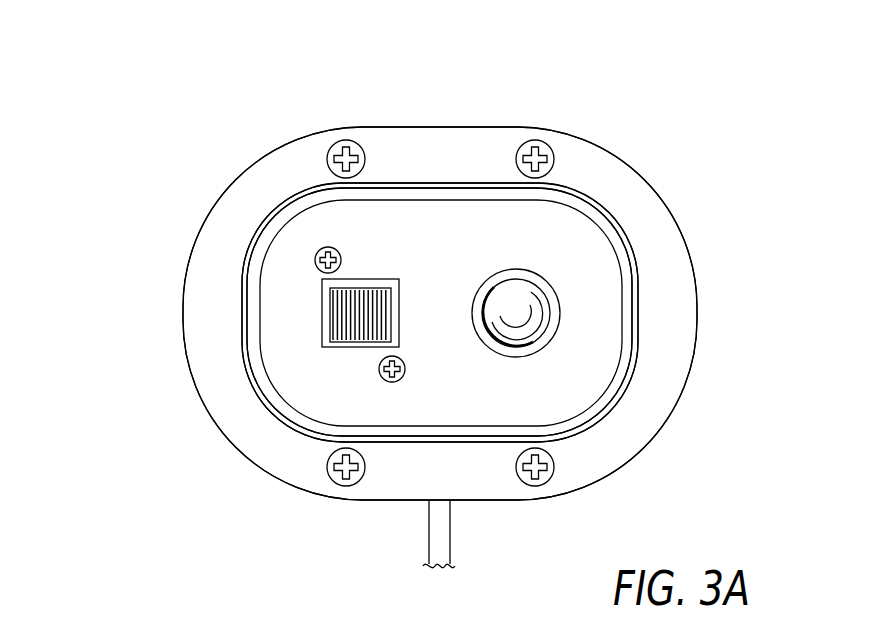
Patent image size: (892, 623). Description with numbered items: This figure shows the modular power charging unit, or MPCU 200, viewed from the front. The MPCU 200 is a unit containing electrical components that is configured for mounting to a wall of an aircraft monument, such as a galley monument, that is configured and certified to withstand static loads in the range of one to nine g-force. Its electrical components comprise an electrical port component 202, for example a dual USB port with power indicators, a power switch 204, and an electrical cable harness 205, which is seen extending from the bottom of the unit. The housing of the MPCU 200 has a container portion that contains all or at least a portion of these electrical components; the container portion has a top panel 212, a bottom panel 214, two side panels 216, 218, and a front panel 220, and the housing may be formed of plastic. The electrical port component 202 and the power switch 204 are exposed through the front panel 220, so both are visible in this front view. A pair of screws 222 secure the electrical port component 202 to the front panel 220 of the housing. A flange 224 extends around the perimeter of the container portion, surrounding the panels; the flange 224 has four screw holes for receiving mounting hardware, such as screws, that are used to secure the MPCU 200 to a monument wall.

The MPCU 200 is at (219, 119).
The electrical port component 202 is at (332, 347).
The power switch 204 is at (553, 313).
The electrical cable harness 205 is at (450, 532).
The top panel 212 is at (442, 184).
The bottom panel 214 is at (393, 436).
The side panel 216 is at (630, 258).
The side panel 218 is at (242, 341).
The front panel 220 is at (562, 387).
The screws 222 is at (315, 260).
The flange 224 is at (227, 392).